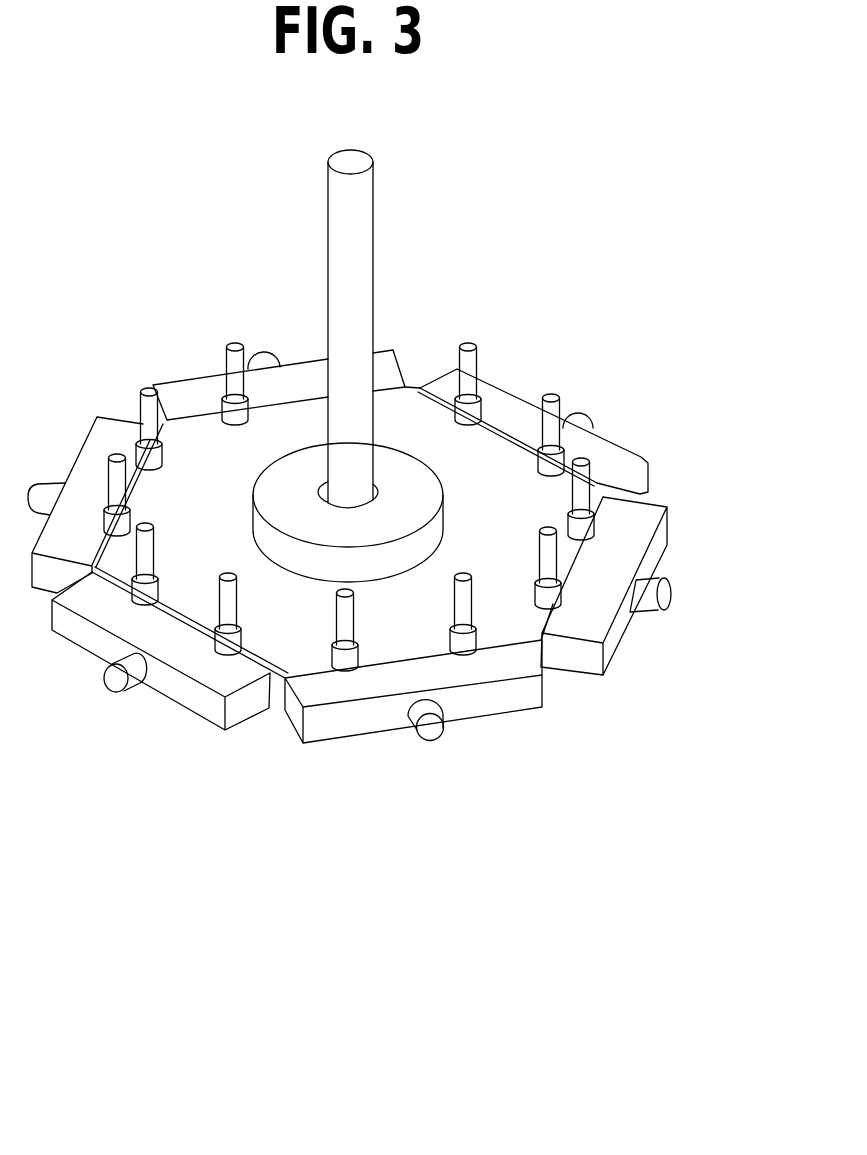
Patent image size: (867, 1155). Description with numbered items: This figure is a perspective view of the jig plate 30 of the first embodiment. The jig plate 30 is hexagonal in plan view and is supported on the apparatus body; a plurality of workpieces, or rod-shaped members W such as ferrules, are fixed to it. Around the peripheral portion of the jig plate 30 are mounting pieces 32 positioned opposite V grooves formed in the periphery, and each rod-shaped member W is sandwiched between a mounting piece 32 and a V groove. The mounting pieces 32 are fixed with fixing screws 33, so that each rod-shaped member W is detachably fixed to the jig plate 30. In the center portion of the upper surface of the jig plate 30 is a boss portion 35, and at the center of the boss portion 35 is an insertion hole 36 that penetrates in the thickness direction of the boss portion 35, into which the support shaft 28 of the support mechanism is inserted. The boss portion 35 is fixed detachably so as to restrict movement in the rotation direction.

The support shaft 28 is at (347, 275).
The jig plate 30 is at (525, 522).
The mounting piece 32 is at (513, 698).
The fixing screw 33 is at (430, 725).
The boss portion 35 is at (417, 492).
The insertion hole 36 is at (330, 505).
The rod-shaped member W is at (340, 616).